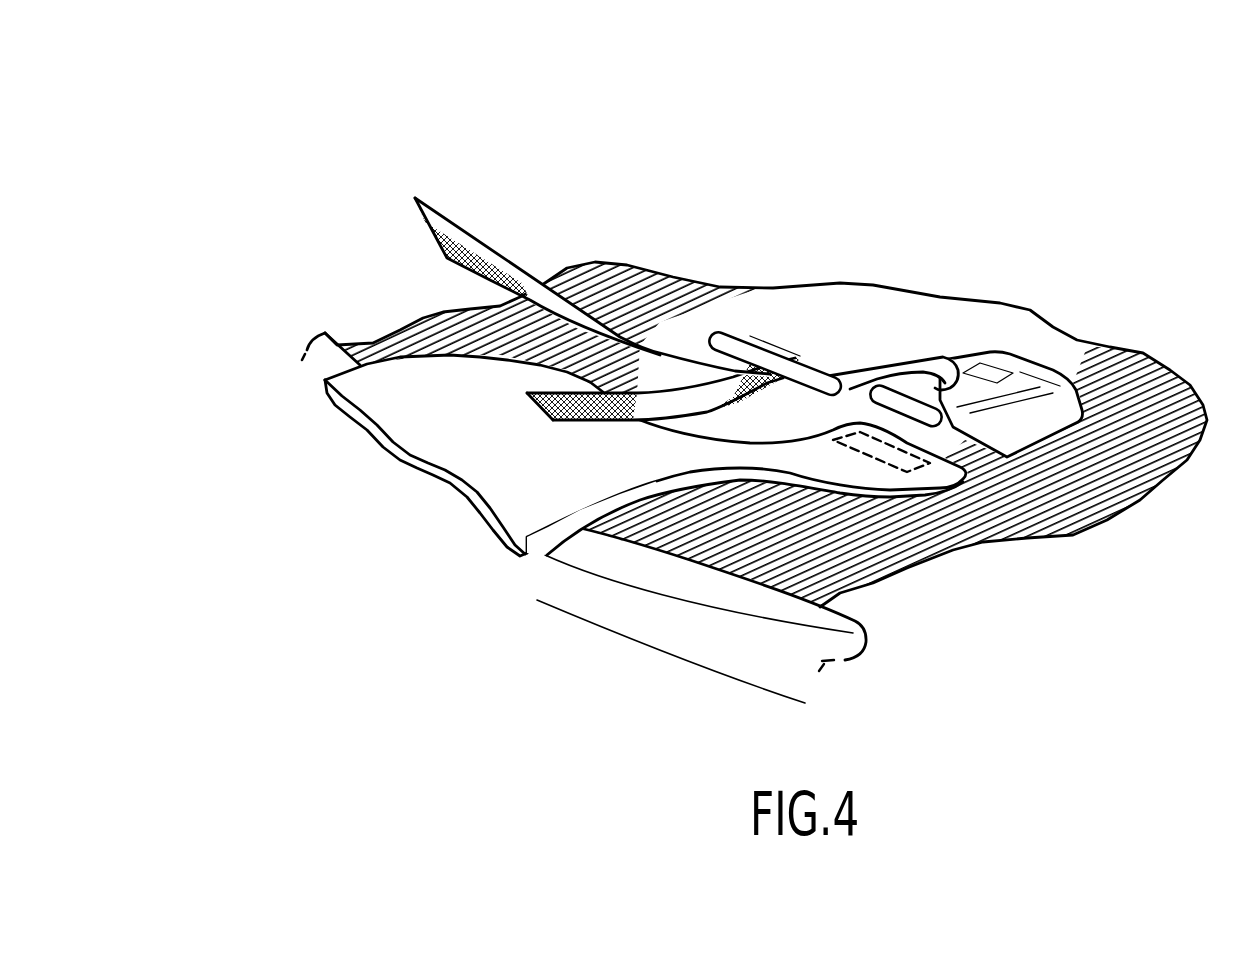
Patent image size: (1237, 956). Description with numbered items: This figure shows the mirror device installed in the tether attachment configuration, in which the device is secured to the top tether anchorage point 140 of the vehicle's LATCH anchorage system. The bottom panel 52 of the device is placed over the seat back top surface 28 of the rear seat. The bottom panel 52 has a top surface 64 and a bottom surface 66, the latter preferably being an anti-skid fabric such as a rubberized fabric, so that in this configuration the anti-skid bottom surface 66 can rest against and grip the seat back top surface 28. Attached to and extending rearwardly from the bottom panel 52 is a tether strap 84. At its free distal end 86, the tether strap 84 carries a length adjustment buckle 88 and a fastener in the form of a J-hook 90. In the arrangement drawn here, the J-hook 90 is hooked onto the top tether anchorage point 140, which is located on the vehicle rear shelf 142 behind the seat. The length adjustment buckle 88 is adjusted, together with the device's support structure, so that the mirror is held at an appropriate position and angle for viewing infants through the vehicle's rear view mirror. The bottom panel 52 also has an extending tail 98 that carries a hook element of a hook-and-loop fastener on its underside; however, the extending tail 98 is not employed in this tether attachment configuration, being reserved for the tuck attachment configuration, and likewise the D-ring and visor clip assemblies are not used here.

The seat back top surface 28 is at (587, 562).
The bottom panel 52 is at (527, 467).
The top surface 64 is at (405, 437).
The bottom surface 66 is at (420, 472).
The tether strap 84 is at (688, 403).
The distal end 86 is at (447, 222).
The length adjustment buckle 88 is at (732, 338).
The J-hook 90 is at (885, 370).
The extending tail 98 is at (843, 467).
The top tether anchorage point 140 is at (1032, 377).
The vehicle rear shelf 142 is at (1078, 492).